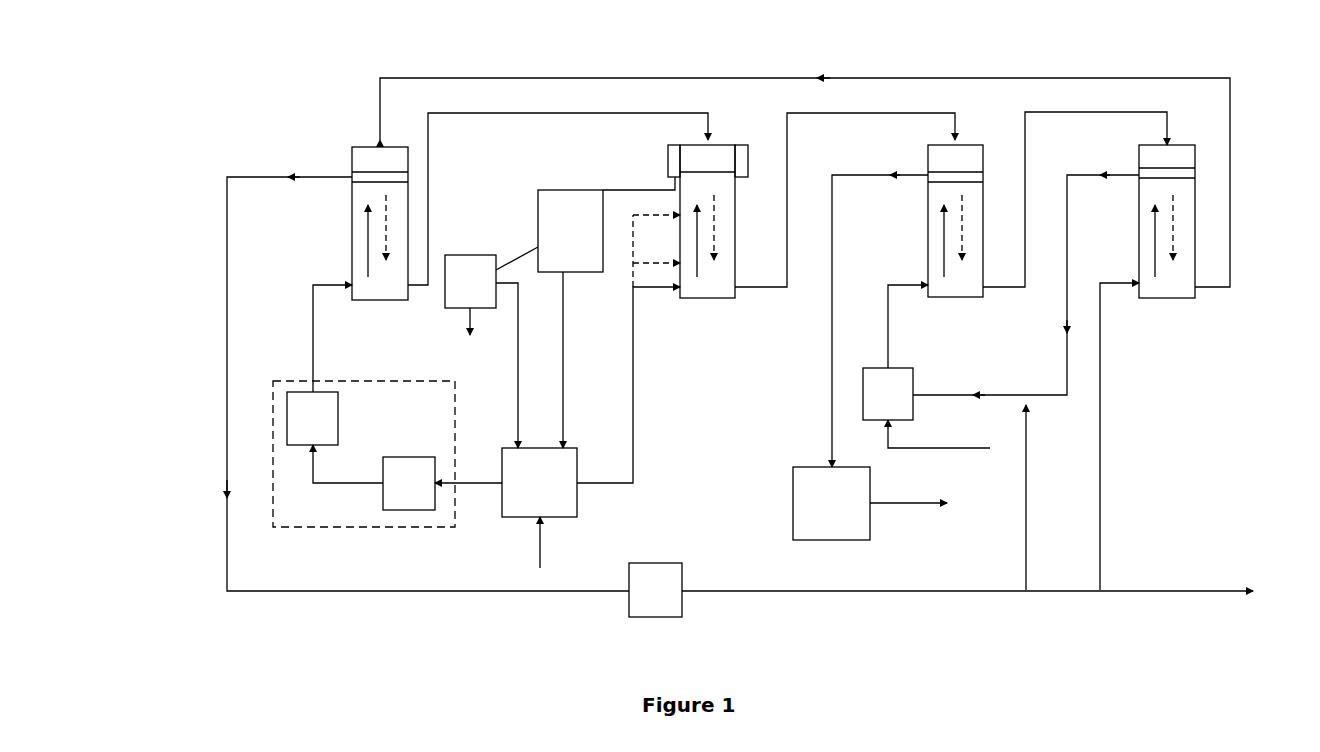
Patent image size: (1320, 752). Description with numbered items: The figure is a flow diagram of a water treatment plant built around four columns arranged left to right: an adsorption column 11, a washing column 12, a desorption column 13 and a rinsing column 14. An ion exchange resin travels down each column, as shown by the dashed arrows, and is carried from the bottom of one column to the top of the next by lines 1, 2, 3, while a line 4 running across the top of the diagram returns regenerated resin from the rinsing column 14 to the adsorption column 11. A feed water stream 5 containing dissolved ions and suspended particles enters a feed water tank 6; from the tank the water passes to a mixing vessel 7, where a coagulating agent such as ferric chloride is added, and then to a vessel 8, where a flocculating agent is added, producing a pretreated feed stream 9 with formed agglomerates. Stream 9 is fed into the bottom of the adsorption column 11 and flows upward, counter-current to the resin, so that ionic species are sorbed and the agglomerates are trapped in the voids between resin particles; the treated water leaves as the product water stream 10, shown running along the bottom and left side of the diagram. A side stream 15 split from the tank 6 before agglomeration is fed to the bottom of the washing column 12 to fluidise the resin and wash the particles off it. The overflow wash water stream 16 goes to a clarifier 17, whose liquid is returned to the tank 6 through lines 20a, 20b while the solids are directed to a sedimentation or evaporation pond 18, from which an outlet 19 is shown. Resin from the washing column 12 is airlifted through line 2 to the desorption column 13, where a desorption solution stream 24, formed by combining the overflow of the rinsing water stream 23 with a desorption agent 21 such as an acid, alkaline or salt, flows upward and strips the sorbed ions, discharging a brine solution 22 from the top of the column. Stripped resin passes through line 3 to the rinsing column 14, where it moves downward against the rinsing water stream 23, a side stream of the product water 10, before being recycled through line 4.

The line 1 is at (563, 113).
The line 2 is at (882, 113).
The line 3 is at (1068, 112).
The line 4 is at (717, 78).
The feed water stream 5 is at (550, 544).
The feed water tank 6 is at (539, 482).
The mixing vessel 7 is at (442, 483).
The vessel 8 is at (364, 454).
The pretreated feed stream 9 is at (313, 336).
The product water stream 10 is at (227, 385).
The adsorption column 11 is at (352, 200).
The washing column 12 is at (737, 232).
The desorption column 13 is at (928, 205).
The rinsing column 14 is at (1139, 205).
The side stream 15 is at (633, 392).
The overflow wash water stream 16 is at (622, 190).
The clarifier 17 is at (570, 231).
The sedimentation or evaporation pond 18 is at (491, 277).
The outlet line 19 is at (472, 339).
The line 20a is at (563, 345).
The line 20b is at (518, 357).
The desorption agent 21 is at (940, 450).
The brine solution 22 is at (832, 320).
The rinsing water stream 23 is at (1119, 436).
The desorption solution stream 24 is at (888, 318).